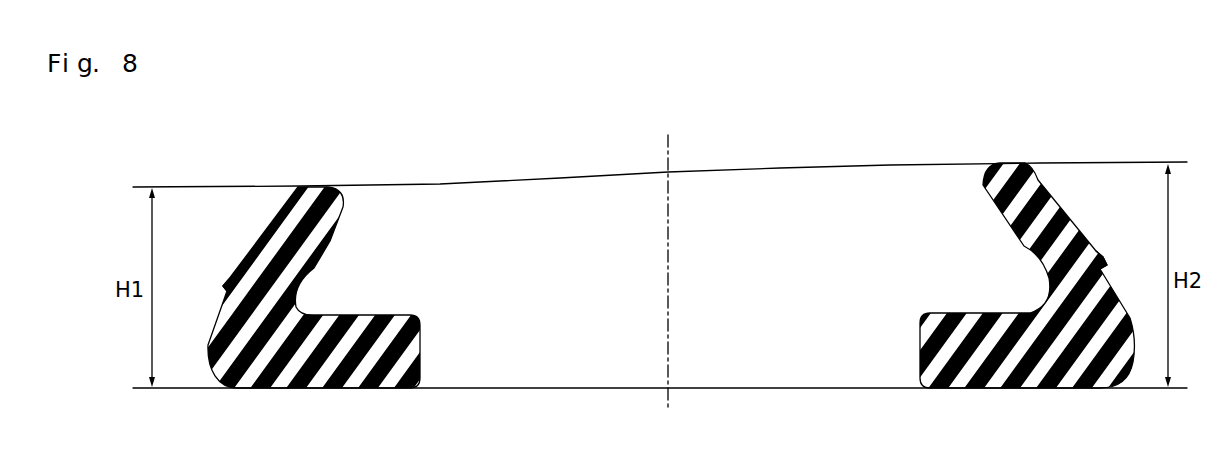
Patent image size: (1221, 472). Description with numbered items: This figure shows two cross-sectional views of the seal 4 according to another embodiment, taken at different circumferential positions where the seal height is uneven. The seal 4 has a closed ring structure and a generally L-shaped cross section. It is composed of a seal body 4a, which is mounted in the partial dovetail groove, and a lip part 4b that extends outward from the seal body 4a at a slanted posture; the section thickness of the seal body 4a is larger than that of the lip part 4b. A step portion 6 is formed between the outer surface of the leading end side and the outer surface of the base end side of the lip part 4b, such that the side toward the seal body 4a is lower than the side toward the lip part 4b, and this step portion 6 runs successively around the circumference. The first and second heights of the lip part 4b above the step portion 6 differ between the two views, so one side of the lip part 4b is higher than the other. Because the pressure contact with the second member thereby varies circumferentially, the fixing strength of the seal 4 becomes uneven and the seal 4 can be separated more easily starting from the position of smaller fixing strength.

The seal 4 is at (899, 118).
The seal body 4a is at (334, 373).
The lip part 4b is at (312, 254).
The step portion 6 is at (228, 289).